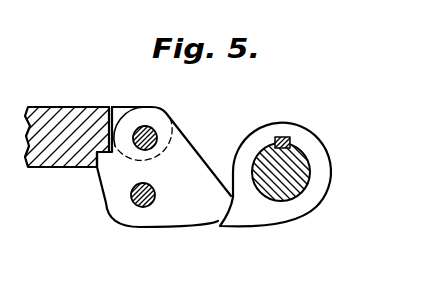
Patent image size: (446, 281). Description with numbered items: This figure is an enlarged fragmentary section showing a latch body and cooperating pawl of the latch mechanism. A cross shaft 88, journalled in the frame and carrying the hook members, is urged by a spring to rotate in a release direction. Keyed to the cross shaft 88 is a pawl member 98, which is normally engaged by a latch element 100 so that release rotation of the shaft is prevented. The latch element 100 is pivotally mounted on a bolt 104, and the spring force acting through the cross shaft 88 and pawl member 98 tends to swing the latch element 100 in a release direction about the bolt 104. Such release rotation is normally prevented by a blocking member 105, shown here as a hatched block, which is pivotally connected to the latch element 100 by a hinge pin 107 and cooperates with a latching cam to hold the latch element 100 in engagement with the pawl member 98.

The cross shaft 88 is at (301, 165).
The pawl member 98 is at (244, 223).
The latch element 100 is at (191, 148).
The bolt 104 is at (146, 207).
The blocking member 105 is at (93, 106).
The hinge pin 107 is at (154, 129).